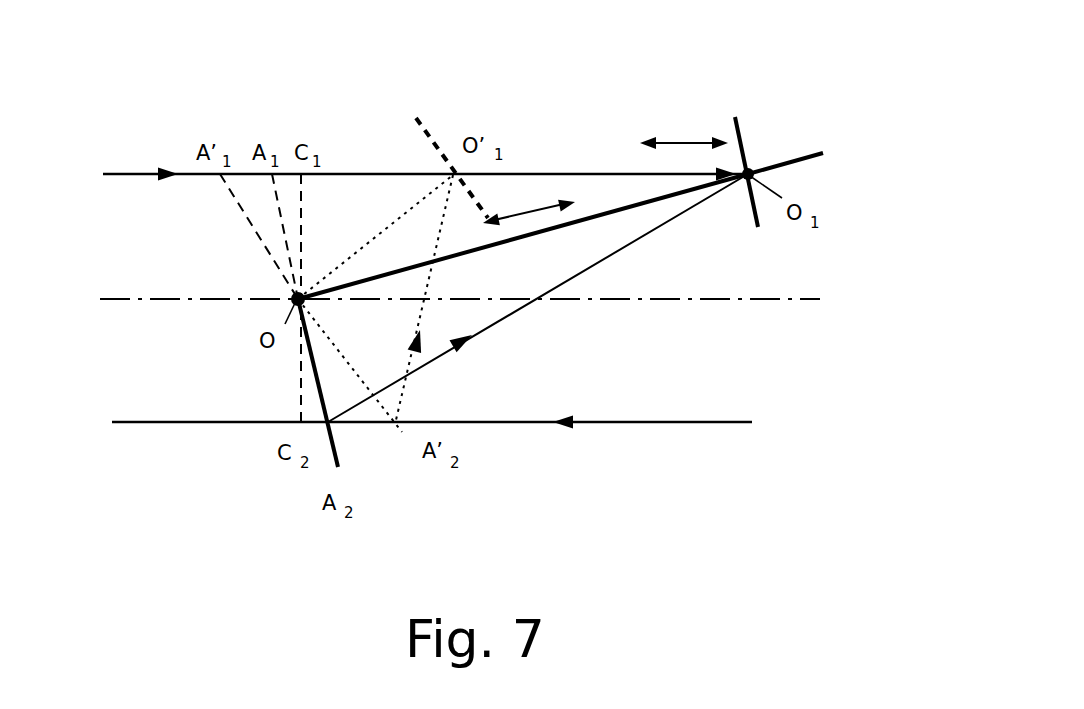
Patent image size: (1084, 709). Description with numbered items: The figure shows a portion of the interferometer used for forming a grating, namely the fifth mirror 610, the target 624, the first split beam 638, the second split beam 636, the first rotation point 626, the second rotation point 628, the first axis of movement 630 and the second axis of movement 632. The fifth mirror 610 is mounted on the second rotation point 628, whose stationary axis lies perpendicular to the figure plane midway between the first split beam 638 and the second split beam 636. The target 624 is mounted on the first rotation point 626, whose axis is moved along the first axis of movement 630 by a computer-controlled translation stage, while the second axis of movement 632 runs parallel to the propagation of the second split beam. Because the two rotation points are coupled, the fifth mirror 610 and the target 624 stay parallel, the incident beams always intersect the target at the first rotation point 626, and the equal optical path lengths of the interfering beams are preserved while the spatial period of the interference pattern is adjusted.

The mirror at point O 610 is at (340, 463).
The mirror at point O1 624 is at (752, 215).
The reflected beam beyond O1 626 is at (752, 175).
The optical axis / pivot at O 628 is at (298, 299).
The displacement direction of mirror O1 630 is at (687, 145).
The displacement direction of mirror O'1 632 is at (523, 215).
The return beam 636 is at (640, 422).
The incident beam 638 is at (370, 174).